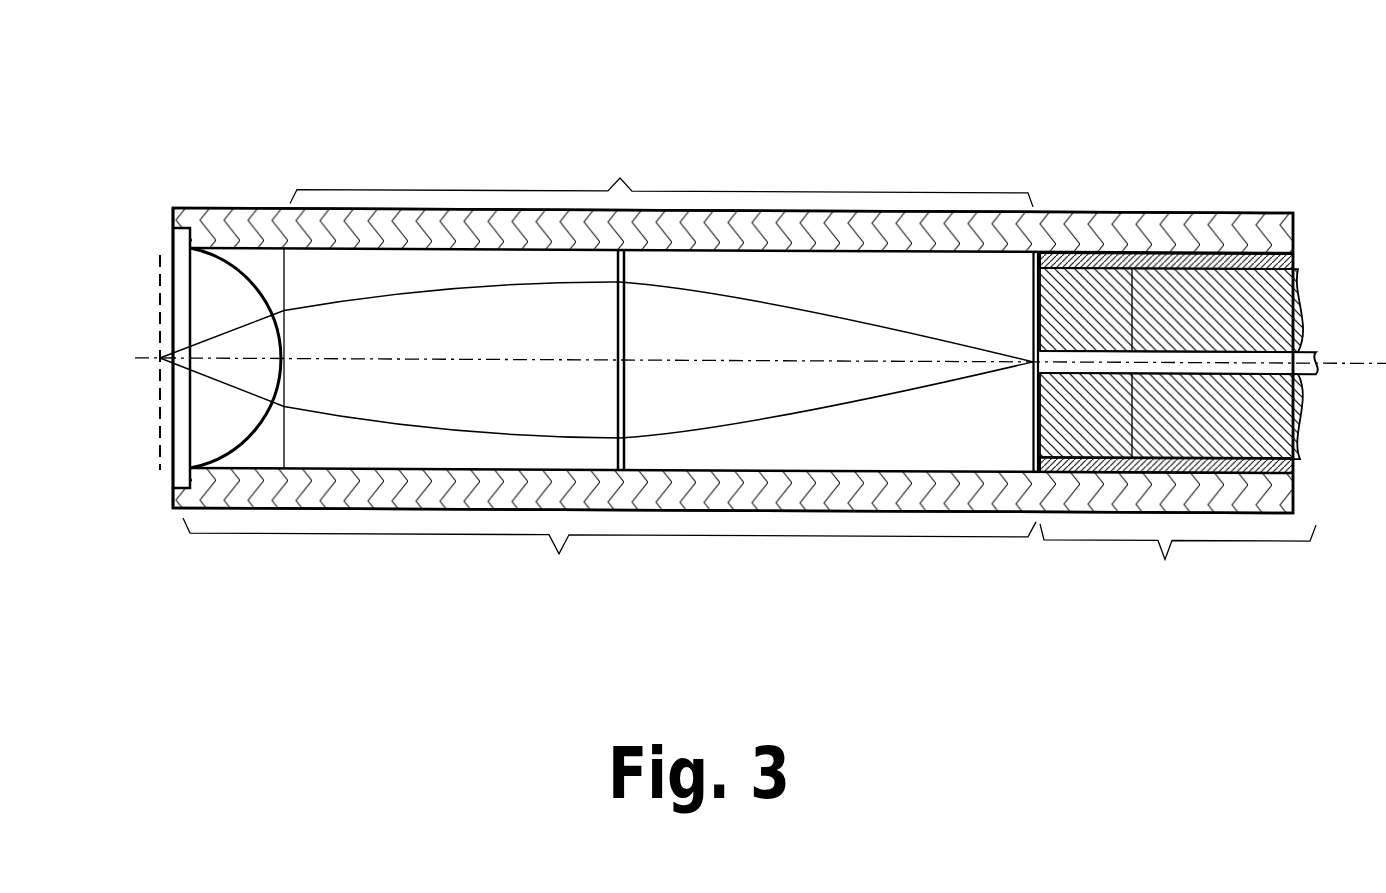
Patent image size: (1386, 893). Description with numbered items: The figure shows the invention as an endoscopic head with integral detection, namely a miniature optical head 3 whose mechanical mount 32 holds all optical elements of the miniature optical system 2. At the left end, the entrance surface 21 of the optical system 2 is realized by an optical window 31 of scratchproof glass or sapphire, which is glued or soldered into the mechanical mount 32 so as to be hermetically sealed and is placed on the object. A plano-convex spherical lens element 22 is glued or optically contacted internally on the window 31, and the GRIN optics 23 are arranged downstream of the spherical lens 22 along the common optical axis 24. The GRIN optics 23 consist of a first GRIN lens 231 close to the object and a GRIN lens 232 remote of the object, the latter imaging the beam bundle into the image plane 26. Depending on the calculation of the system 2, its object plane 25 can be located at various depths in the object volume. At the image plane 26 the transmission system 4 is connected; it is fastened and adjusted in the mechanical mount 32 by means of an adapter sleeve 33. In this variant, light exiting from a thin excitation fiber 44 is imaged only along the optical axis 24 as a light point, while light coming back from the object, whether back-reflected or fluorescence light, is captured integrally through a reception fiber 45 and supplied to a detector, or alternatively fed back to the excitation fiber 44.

The miniature optical head 3 is at (160, 128).
The optical window 31 is at (183, 220).
The mechanical mount 32 is at (876, 226).
The adapter sleeve 33 is at (1086, 260).
The miniature optical system 2 is at (559, 556).
The entrance surface 21 is at (183, 516).
The plano-convex spherical lens element 22 is at (255, 417).
The GRIN optics 23 is at (620, 174).
The first GRIN lens 231 is at (418, 262).
The GRIN lens remote of the object 232 is at (738, 262).
The optical axis 24 is at (775, 365).
The object plane 25 is at (159, 510).
The image plane 26 is at (1030, 425).
The transmission system 4 is at (1165, 556).
The excitation fiber 44 is at (1168, 213).
The reception fiber 45 is at (1263, 283).